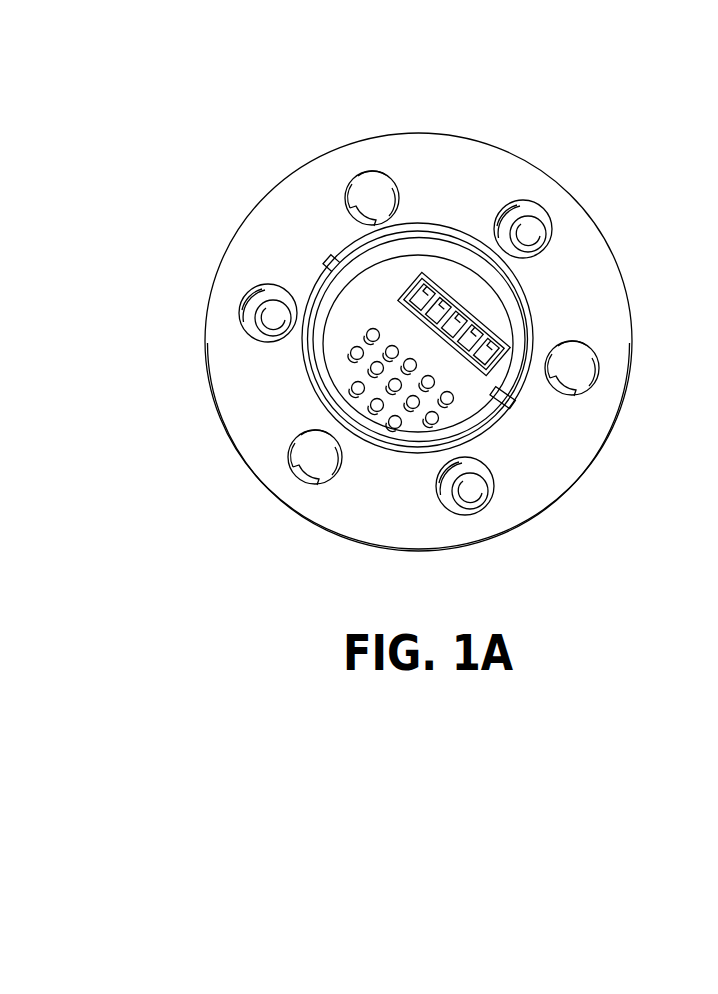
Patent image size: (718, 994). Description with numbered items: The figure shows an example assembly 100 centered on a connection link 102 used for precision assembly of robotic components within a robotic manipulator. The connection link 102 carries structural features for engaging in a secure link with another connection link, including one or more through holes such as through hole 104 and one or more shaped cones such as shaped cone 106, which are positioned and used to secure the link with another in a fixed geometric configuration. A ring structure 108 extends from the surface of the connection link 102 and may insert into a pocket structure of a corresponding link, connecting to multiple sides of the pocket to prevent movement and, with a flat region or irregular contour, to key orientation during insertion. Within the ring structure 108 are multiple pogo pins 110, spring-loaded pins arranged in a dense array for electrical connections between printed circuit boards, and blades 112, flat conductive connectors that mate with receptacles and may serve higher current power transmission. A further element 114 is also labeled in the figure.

The connector assembly 100 is at (570, 73).
The connection link 102 is at (299, 177).
The through hole 104 is at (253, 293).
The shaped cone 106 is at (568, 397).
The ring structure 108 is at (480, 400).
The pogo pins 110 is at (392, 418).
The blades 112 is at (488, 332).
The connector element 114 is at (707, 254).